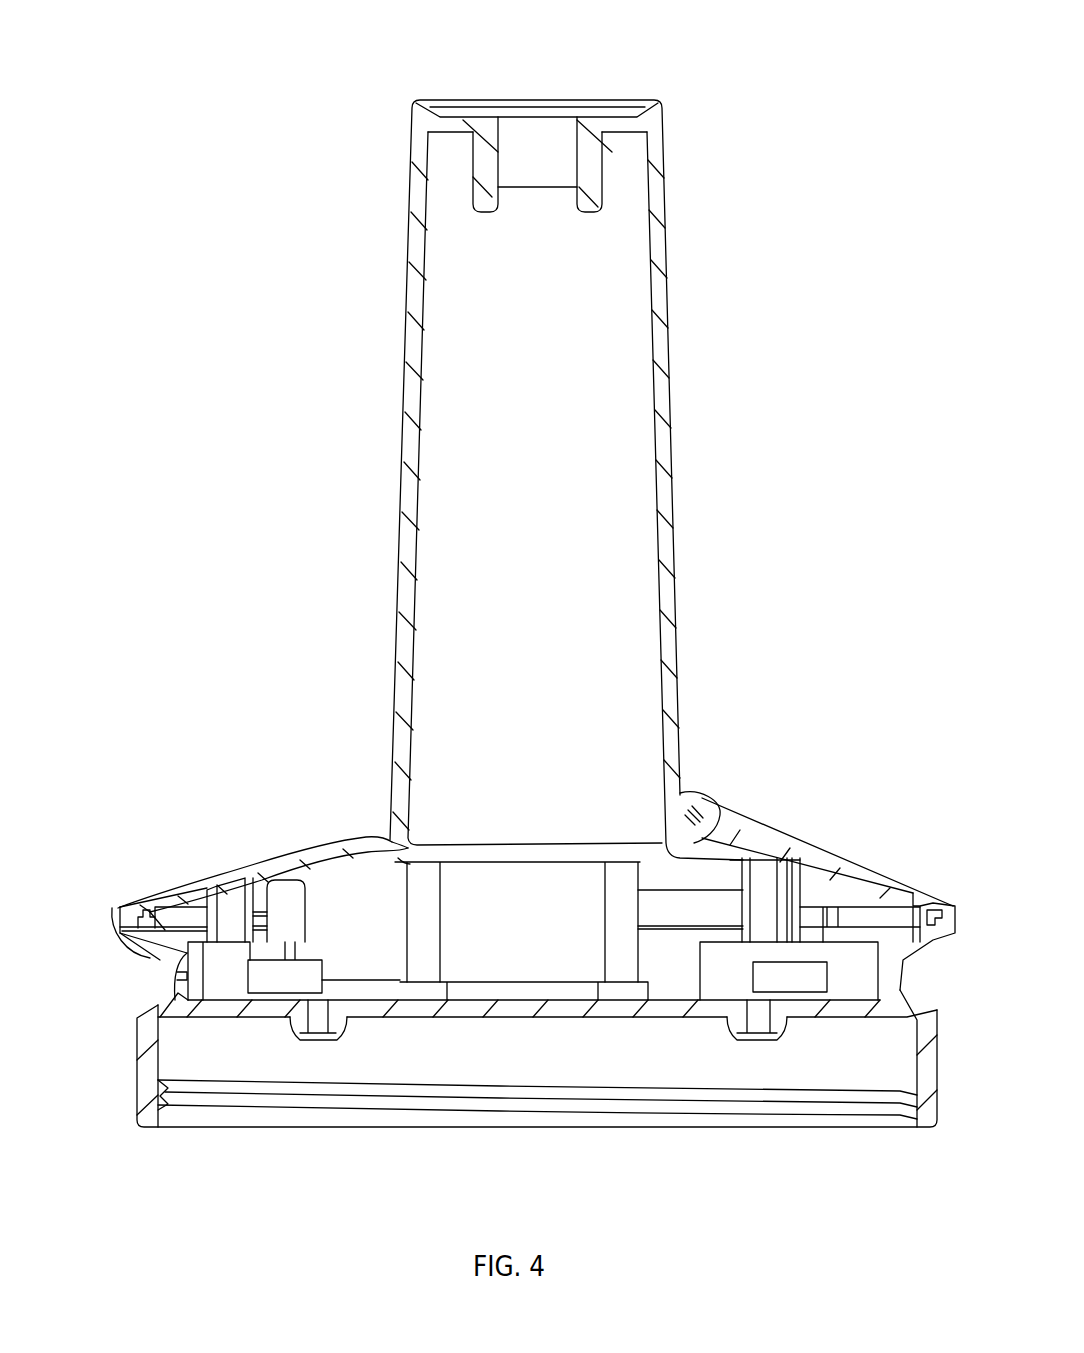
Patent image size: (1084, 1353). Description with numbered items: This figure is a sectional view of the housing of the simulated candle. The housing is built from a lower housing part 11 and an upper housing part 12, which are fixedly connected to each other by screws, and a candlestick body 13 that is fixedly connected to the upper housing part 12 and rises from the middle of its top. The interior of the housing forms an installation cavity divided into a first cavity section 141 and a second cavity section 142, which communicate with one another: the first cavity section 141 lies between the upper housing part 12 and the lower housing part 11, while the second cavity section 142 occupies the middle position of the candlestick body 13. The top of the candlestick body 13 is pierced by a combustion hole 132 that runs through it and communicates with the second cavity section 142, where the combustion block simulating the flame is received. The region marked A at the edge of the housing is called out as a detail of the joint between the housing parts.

The lower housing part 11 is at (140, 1058).
The upper housing part 12 is at (172, 882).
The candlestick body 13 is at (400, 645).
The combustion hole 132 is at (527, 148).
The first cavity section 141 is at (690, 968).
The second cavity section 142 is at (603, 728).
The detail region A is at (116, 899).